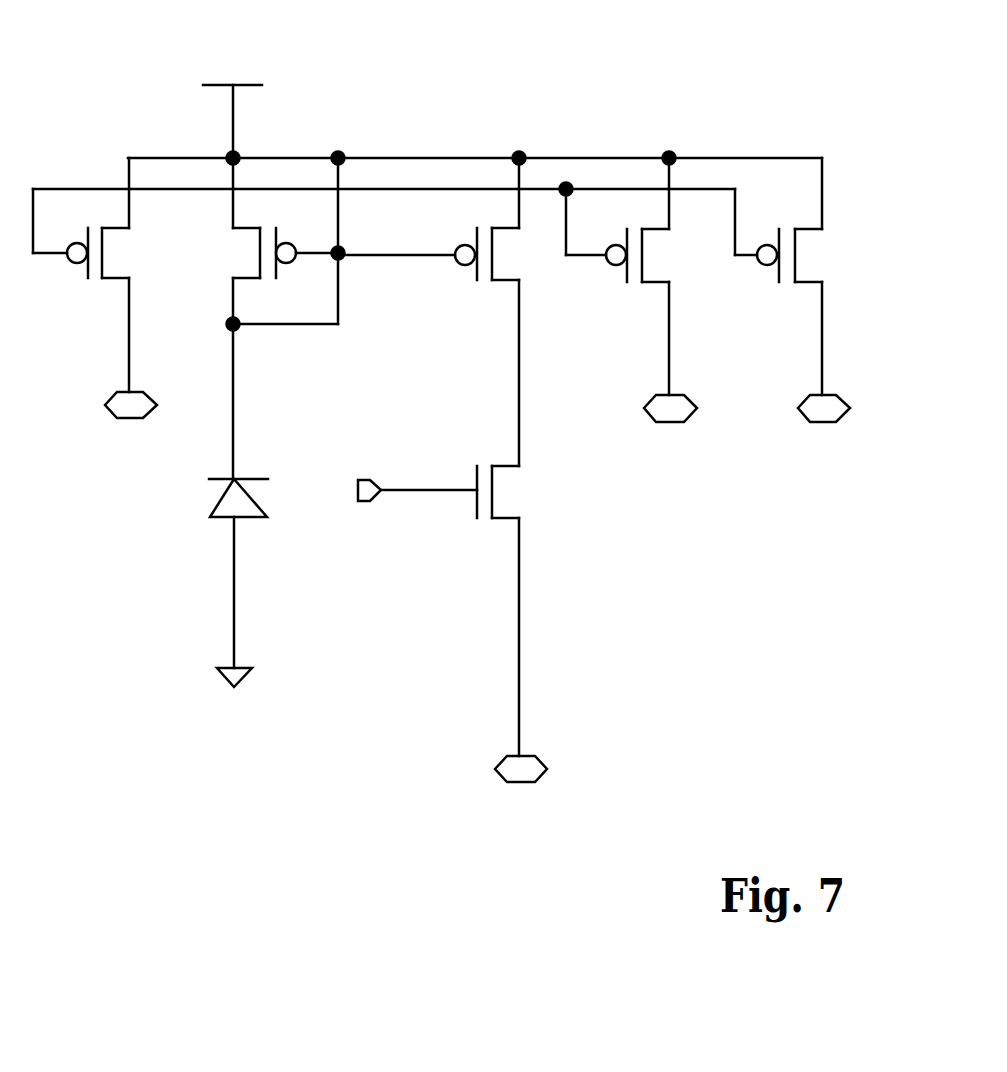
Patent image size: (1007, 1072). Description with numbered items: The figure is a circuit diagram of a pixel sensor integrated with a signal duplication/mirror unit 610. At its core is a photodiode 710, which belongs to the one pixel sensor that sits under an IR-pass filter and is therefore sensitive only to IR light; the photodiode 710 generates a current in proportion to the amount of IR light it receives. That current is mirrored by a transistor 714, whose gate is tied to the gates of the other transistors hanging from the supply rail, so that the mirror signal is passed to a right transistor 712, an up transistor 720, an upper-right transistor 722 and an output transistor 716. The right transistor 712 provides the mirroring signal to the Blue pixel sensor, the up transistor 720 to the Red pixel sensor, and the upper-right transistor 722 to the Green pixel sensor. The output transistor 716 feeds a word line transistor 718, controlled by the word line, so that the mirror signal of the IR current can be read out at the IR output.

The signal duplication/mirror unit 610 is at (770, 44).
The photodiode 710 is at (253, 583).
The right transistor 712 is at (110, 305).
The transistor 714 is at (283, 318).
The output transistor 716 is at (436, 312).
The word line transistor 718 is at (437, 639).
The up transistor 720 is at (631, 305).
The upper-right transistor 722 is at (817, 305).